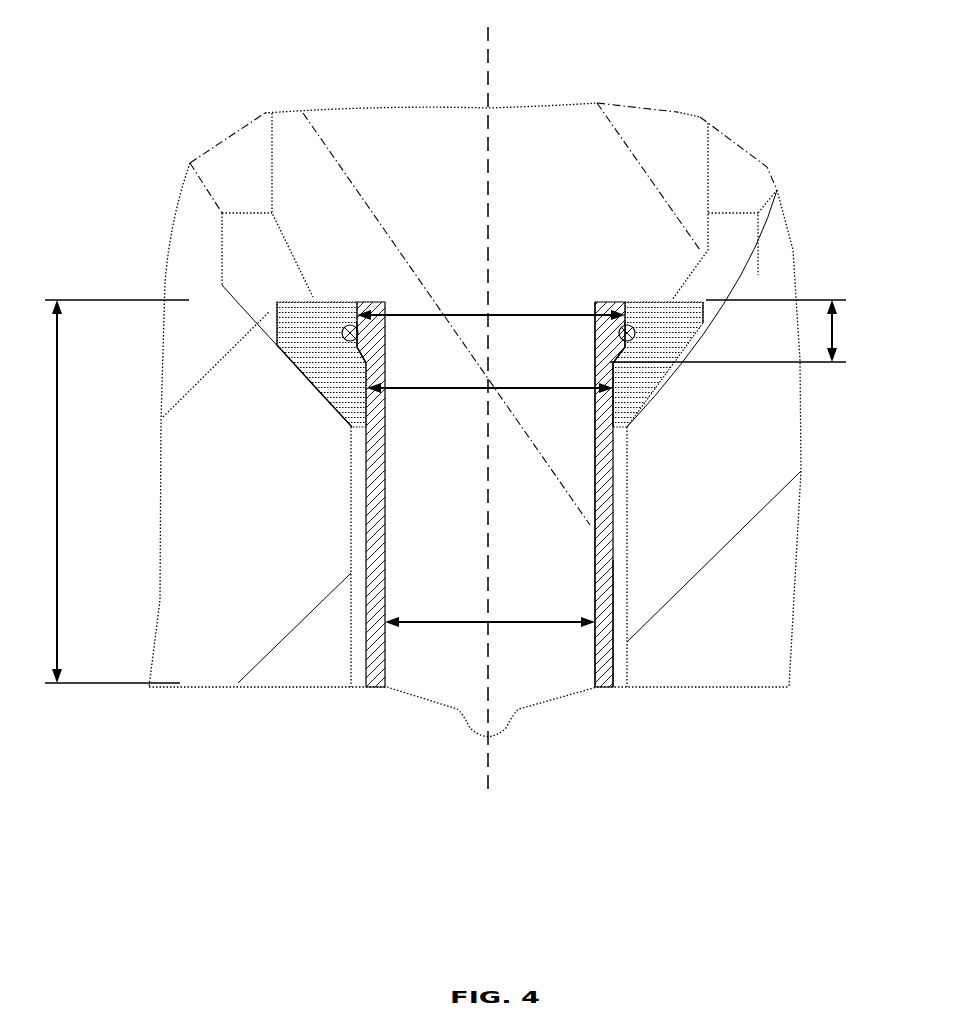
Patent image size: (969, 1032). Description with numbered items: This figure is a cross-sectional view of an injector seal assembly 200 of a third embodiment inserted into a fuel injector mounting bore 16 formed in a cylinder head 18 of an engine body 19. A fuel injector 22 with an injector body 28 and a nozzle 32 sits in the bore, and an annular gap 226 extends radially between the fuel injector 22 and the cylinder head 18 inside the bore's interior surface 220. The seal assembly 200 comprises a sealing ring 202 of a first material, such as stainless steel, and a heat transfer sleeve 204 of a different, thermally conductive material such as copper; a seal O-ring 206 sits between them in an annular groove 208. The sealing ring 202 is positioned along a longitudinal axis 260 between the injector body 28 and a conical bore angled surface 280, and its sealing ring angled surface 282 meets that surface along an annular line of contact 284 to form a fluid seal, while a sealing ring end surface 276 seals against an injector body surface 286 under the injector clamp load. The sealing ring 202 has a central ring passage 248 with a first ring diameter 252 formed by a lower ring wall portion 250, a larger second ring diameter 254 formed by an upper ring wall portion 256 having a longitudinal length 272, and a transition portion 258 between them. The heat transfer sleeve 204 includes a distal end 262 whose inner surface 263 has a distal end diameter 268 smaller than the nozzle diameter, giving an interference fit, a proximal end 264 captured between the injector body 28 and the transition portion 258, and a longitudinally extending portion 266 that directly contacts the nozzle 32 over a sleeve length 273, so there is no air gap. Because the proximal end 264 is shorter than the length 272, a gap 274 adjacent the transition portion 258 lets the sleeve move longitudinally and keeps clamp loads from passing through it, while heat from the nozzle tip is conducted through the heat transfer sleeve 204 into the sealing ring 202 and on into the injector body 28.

The fuel injector mounting bore 16 is at (619, 533).
The cylinder head 18 is at (209, 582).
The engine body 19 is at (183, 160).
The fuel injector 22 is at (255, 157).
The injector body 28 is at (683, 104).
The nozzle 32 is at (557, 698).
The injector seal assembly 200 is at (322, 499).
The sealing ring 202 is at (680, 307).
The heat transfer sleeve 204 is at (607, 488).
The seal O-ring 206 is at (632, 336).
The annular groove 208 is at (343, 323).
The interior surface 220 is at (757, 243).
The annular gap 226 is at (250, 255).
The central ring passage 248 is at (608, 403).
The lower ring wall portion 250 is at (370, 412).
The first ring diameter 252 is at (495, 386).
The second ring diameter 254 is at (472, 312).
The upper ring wall portion 256 is at (355, 310).
The transition portion 258 is at (358, 362).
The longitudinal axis 260 is at (488, 68).
The distal end 262 is at (610, 672).
The inner surface 263 is at (600, 567).
The proximal end 264 is at (383, 310).
The longitudinally extending portion 266 is at (363, 592).
The distal end diameter 268 is at (500, 620).
The longitudinal length 272 is at (835, 330).
The sleeve length 273 is at (58, 413).
The gap 274 is at (618, 360).
The sealing ring end surface 276 is at (645, 300).
The bore angled surface 280 is at (282, 340).
The sealing ring angled surface 282 is at (313, 387).
The annular line of contact 284 is at (336, 406).
The injector body surface 286 is at (658, 302).